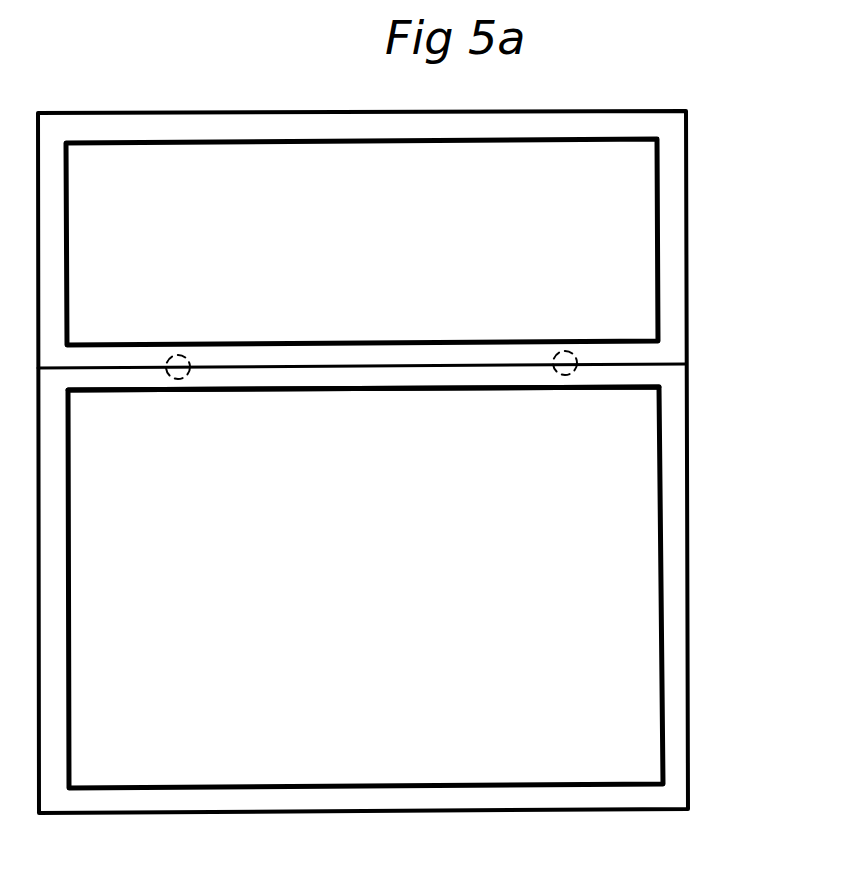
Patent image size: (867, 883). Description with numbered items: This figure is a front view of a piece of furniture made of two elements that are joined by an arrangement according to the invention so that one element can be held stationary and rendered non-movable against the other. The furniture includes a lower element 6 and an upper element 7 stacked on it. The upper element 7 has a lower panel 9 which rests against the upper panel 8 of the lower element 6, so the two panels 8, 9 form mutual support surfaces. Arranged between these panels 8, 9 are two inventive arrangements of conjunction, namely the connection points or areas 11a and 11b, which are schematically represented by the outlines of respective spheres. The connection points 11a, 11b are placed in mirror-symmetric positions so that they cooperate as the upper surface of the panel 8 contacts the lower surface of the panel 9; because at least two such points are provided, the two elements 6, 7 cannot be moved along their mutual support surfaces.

The lower element 6 is at (676, 628).
The upper element 7 is at (670, 265).
The upper panel 8 is at (612, 380).
The lower panel 9 is at (632, 352).
The connection point 11a is at (178, 379).
The connection point 11b is at (563, 375).